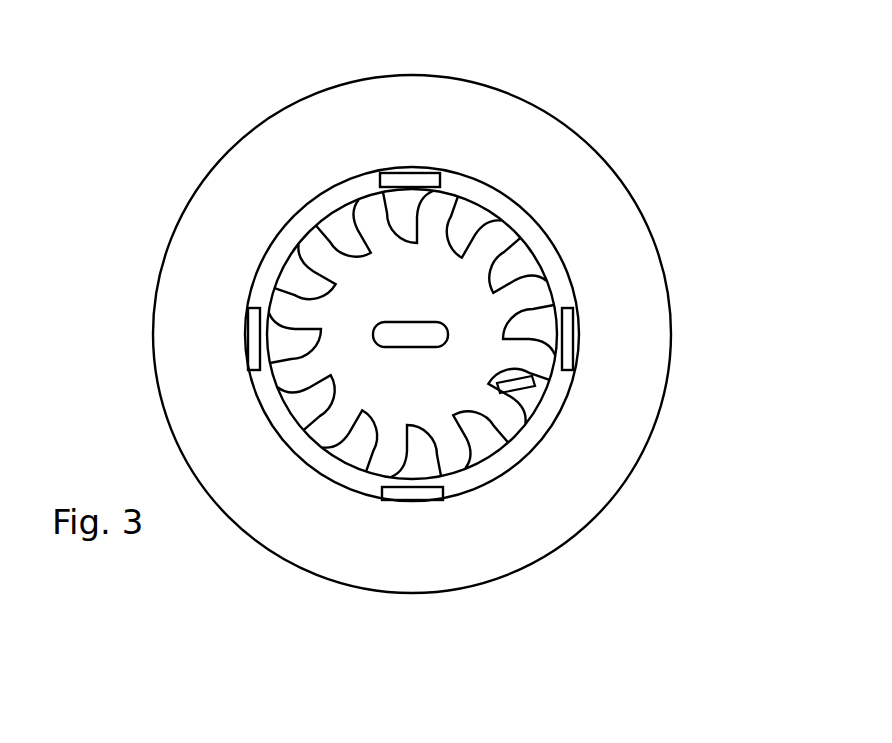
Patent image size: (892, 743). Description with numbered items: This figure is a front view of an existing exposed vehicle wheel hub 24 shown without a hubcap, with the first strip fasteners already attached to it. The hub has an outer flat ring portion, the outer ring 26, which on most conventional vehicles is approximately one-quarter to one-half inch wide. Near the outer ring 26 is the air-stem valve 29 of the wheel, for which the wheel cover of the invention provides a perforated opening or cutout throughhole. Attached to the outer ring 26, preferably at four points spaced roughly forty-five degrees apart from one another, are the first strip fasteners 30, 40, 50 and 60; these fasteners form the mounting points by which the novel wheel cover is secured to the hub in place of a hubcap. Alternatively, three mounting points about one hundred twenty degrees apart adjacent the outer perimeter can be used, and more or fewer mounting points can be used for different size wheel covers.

The vehicle wheel hub 24 is at (538, 225).
The outer ring 26 is at (558, 392).
The air-stem valve 29 is at (527, 385).
The first strip fastener 30 is at (407, 176).
The first strip fastener 40 is at (570, 332).
The first strip fastener 50 is at (414, 492).
The first strip fastener 60 is at (254, 343).